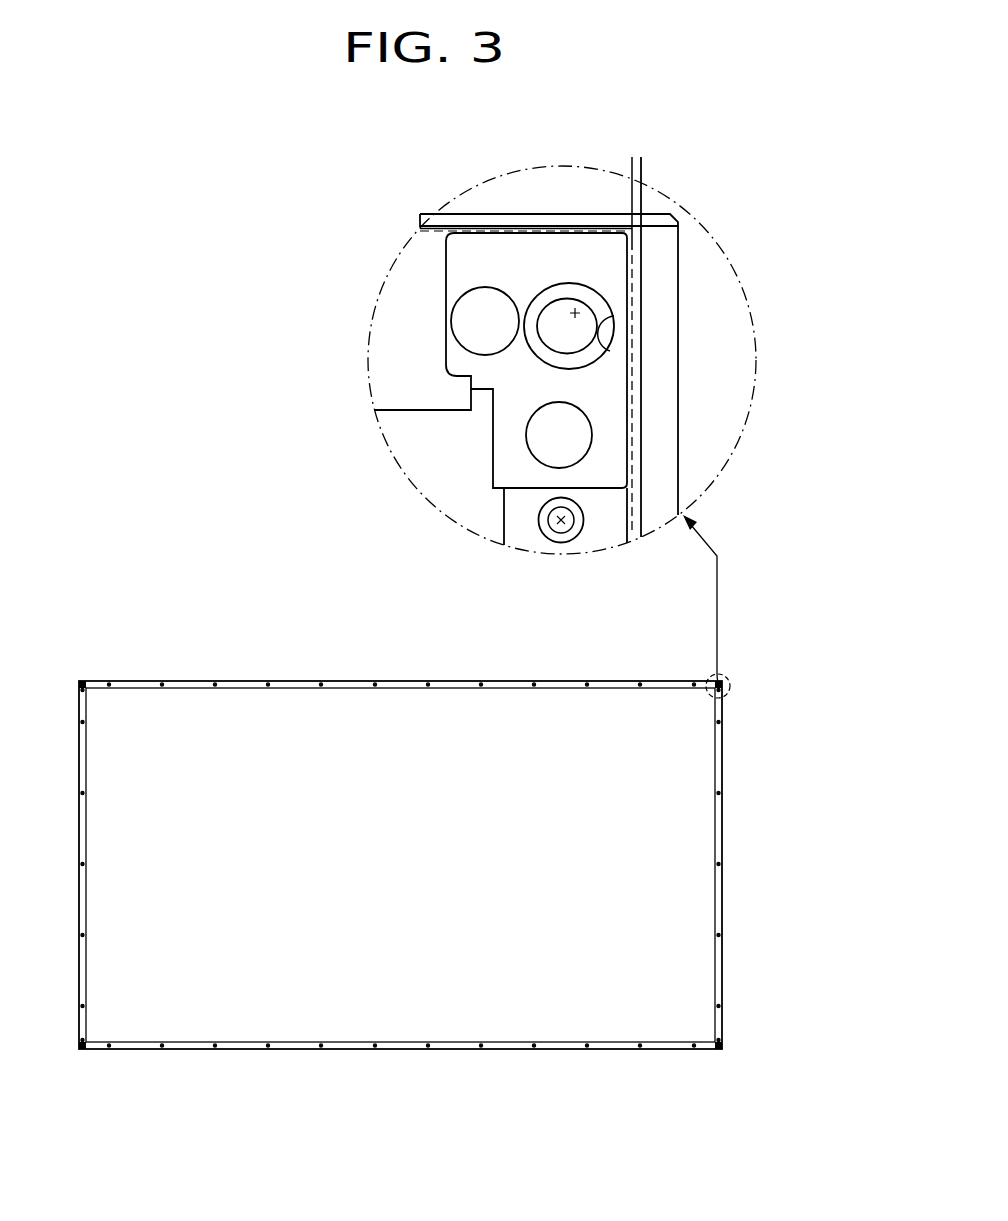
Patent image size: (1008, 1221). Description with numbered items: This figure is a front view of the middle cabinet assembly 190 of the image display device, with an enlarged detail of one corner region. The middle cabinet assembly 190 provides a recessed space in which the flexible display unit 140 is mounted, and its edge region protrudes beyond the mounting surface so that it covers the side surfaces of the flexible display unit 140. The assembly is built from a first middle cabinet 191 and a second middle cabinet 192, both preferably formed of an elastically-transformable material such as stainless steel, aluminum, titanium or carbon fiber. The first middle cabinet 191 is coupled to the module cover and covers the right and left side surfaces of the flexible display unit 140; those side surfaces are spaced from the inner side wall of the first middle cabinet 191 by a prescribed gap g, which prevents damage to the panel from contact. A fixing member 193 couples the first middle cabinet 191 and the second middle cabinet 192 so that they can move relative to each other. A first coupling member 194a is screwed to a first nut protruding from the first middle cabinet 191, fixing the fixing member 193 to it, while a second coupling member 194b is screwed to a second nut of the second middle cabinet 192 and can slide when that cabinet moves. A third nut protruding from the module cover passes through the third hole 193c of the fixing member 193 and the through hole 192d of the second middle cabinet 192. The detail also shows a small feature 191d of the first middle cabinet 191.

The flexible display unit 140 is at (398, 282).
The middle cabinet assembly 190 is at (192, 683).
The first middle cabinet 191 is at (668, 380).
The screw hole 191d is at (562, 528).
The second middle cabinet 192 is at (387, 328).
The through hole 192d is at (578, 311).
The fixing member 193 is at (558, 240).
The third hole 193c is at (610, 318).
The first coupling member 194a is at (577, 436).
The second coupling member 194b is at (485, 287).
The gap g is at (595, 161).